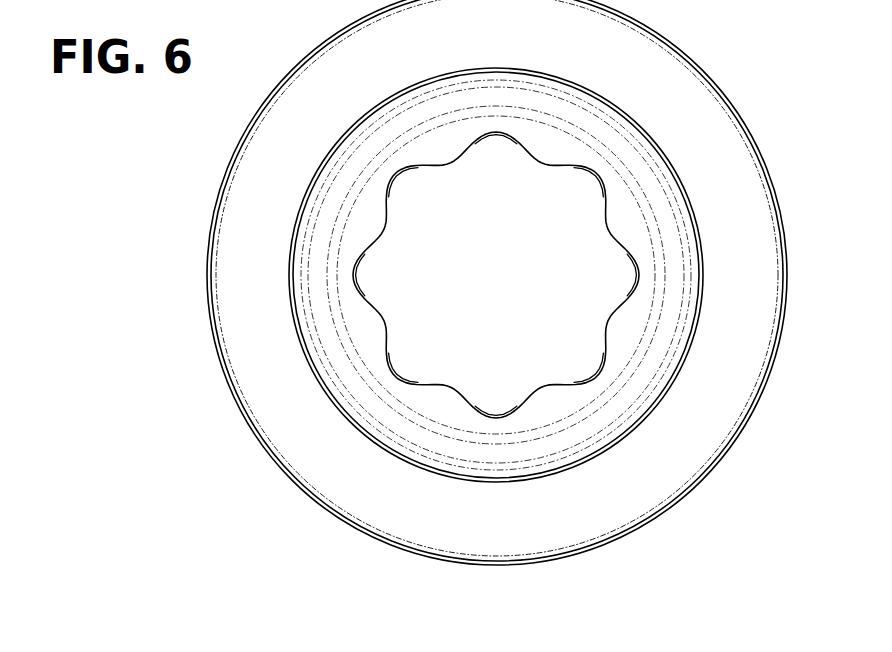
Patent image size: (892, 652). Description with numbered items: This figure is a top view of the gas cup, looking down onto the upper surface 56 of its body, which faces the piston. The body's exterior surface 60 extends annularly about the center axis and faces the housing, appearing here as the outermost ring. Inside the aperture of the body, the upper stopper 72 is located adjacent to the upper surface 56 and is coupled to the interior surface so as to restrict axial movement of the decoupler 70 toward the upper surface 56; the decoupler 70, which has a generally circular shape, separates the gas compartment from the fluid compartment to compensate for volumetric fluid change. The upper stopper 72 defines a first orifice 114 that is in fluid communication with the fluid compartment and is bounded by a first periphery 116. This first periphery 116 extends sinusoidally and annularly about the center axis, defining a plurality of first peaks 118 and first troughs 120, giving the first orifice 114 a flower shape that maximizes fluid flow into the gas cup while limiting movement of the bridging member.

The upper surface 56 is at (717, 147).
The exterior surface 60 is at (205, 315).
The upper stopper 72 is at (560, 147).
The decoupler 70 is at (515, 280).
The first orifice 114 is at (477, 147).
The first periphery 116 is at (430, 167).
The first peaks 118 is at (613, 230).
The first troughs 120 is at (358, 274).